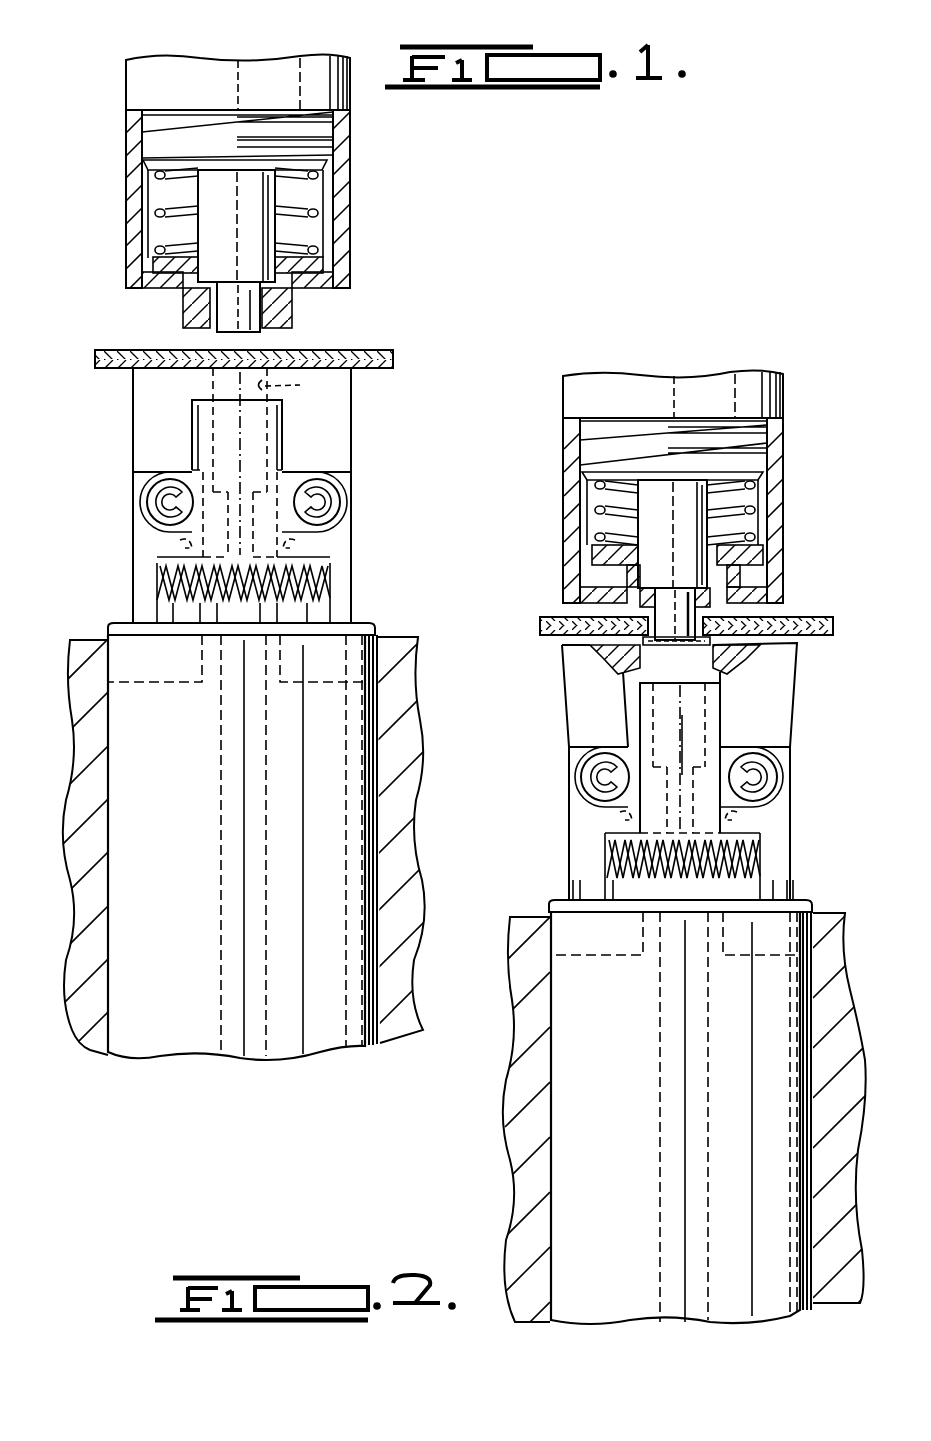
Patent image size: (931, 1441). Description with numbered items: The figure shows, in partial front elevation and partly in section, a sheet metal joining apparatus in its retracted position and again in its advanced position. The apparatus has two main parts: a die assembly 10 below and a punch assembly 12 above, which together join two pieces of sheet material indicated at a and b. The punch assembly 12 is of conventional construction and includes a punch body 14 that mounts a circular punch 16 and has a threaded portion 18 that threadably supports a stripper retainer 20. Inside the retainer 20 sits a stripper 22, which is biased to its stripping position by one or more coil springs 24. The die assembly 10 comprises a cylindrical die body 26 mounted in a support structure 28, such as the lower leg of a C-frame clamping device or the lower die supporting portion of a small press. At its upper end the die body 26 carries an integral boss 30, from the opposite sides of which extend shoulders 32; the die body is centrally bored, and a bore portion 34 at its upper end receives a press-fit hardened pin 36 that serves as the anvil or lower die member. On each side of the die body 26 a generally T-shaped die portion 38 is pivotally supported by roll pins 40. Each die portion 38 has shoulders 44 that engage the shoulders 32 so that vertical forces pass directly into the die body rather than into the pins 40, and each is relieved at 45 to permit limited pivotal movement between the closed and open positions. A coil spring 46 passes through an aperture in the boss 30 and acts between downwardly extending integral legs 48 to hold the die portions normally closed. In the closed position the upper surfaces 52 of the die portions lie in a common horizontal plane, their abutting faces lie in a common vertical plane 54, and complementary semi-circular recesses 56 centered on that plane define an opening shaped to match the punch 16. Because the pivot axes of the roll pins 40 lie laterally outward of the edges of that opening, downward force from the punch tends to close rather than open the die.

In FIG. 1, the die assembly 10 is at (462, 510).
In FIG. 2, the die assembly 10 is at (845, 795).
In FIG. 1, the punch assembly 12 is at (392, 185).
In FIG. 2, the punch assembly 12 is at (800, 410).
In FIG. 1, the punch body 14 is at (243, 68).
In FIG. 2, the punch body 14 is at (693, 378).
In FIG. 1, the circular punch 16 is at (262, 298).
In FIG. 2, the circular punch 16 is at (700, 618).
In FIG. 1, the threaded portion 18 is at (180, 124).
In FIG. 2, the threaded portion 18 is at (673, 504).
In FIG. 1, the stripper retainer 20 is at (345, 196).
In FIG. 2, the stripper retainer 20 is at (775, 478).
In FIG. 1, the stripper 22 is at (185, 292).
In FIG. 2, the stripper 22 is at (677, 576).
In FIG. 1, the coil springs 24 is at (160, 200).
In FIG. 2, the coil springs 24 is at (672, 512).
In FIG. 1, the die body 26 is at (182, 798).
In FIG. 2, the die body 26 is at (622, 1118).
In FIG. 1, the support structure 28 is at (80, 752).
In FIG. 2, the support structure 28 is at (514, 1136).
In FIG. 1, the boss 30 is at (205, 457).
In FIG. 2, the boss 30 is at (715, 722).
In FIG. 1, the shoulders 32 is at (173, 468).
In FIG. 2, the shoulders 32 is at (620, 740).
In FIG. 1, the bore portion 34 is at (262, 452).
In FIG. 2, the bore portion 34 is at (680, 758).
In FIG. 1, the hardened pin 36 is at (213, 418).
In FIG. 2, the hardened pin 36 is at (677, 663).
In FIG. 1, the die portion 38 is at (131, 452).
In FIG. 2, the die portion 38 is at (572, 662).
In FIG. 1, the roll pins 40 is at (160, 522).
In FIG. 2, the roll pins 40 is at (597, 780).
In FIG. 1, the shoulders 44 is at (140, 474).
In FIG. 2, the shoulders 44 is at (582, 752).
In FIG. 1, the relief 45 is at (178, 543).
In FIG. 2, the relief 45 is at (618, 812).
In FIG. 1, the coil spring 46 is at (332, 578).
In FIG. 2, the coil spring 46 is at (682, 866).
In FIG. 1, the legs 48 is at (140, 608).
In FIG. 2, the legs 48 is at (590, 880).
In FIG. 1, the upper surfaces 52 is at (100, 358).
In FIG. 2, the upper surfaces 52 is at (686, 626).
In FIG. 1, the vertical plane 54 is at (272, 352).
In FIG. 1, the semi-circular recess 56 is at (298, 390).
In FIG. 1, the sheet material piece a is at (372, 350).
In FIG. 1, the sheet material piece b is at (393, 368).